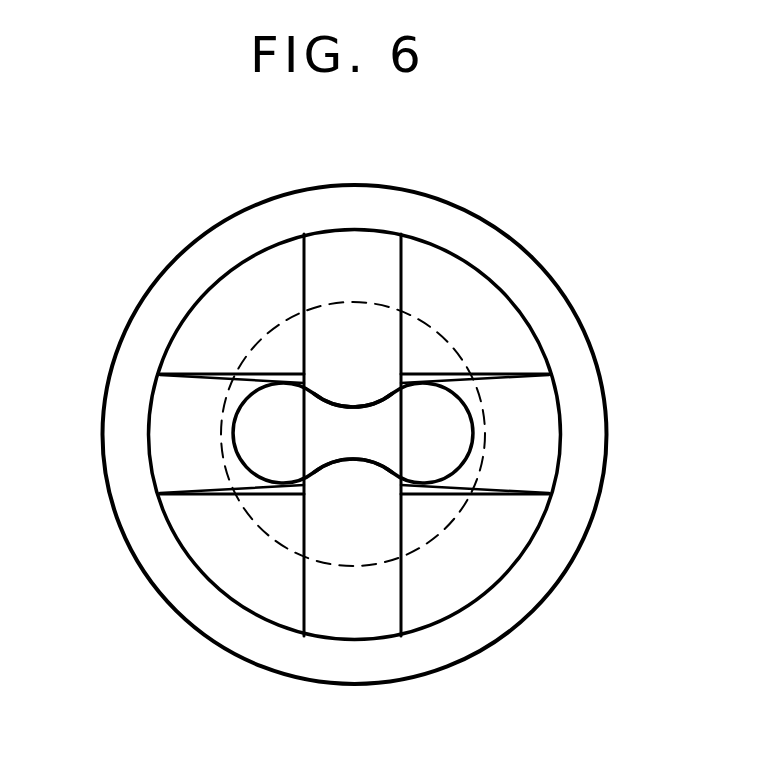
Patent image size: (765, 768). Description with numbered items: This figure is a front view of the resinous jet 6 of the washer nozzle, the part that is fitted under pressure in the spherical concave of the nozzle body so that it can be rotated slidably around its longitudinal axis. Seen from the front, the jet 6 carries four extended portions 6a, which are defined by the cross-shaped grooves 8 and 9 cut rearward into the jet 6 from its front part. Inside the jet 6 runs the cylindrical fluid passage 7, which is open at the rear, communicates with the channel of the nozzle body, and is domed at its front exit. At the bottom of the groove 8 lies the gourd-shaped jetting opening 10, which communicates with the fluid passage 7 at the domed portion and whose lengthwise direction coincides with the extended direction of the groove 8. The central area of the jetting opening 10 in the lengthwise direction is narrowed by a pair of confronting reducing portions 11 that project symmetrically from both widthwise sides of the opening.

The jet 6 is at (468, 199).
The extended portions 6a is at (207, 304).
The fluid passage 7 is at (338, 303).
The groove 8 is at (540, 440).
The groove 9 is at (361, 627).
The jetting opening 10 is at (242, 446).
The reducing portions 11 is at (353, 394).